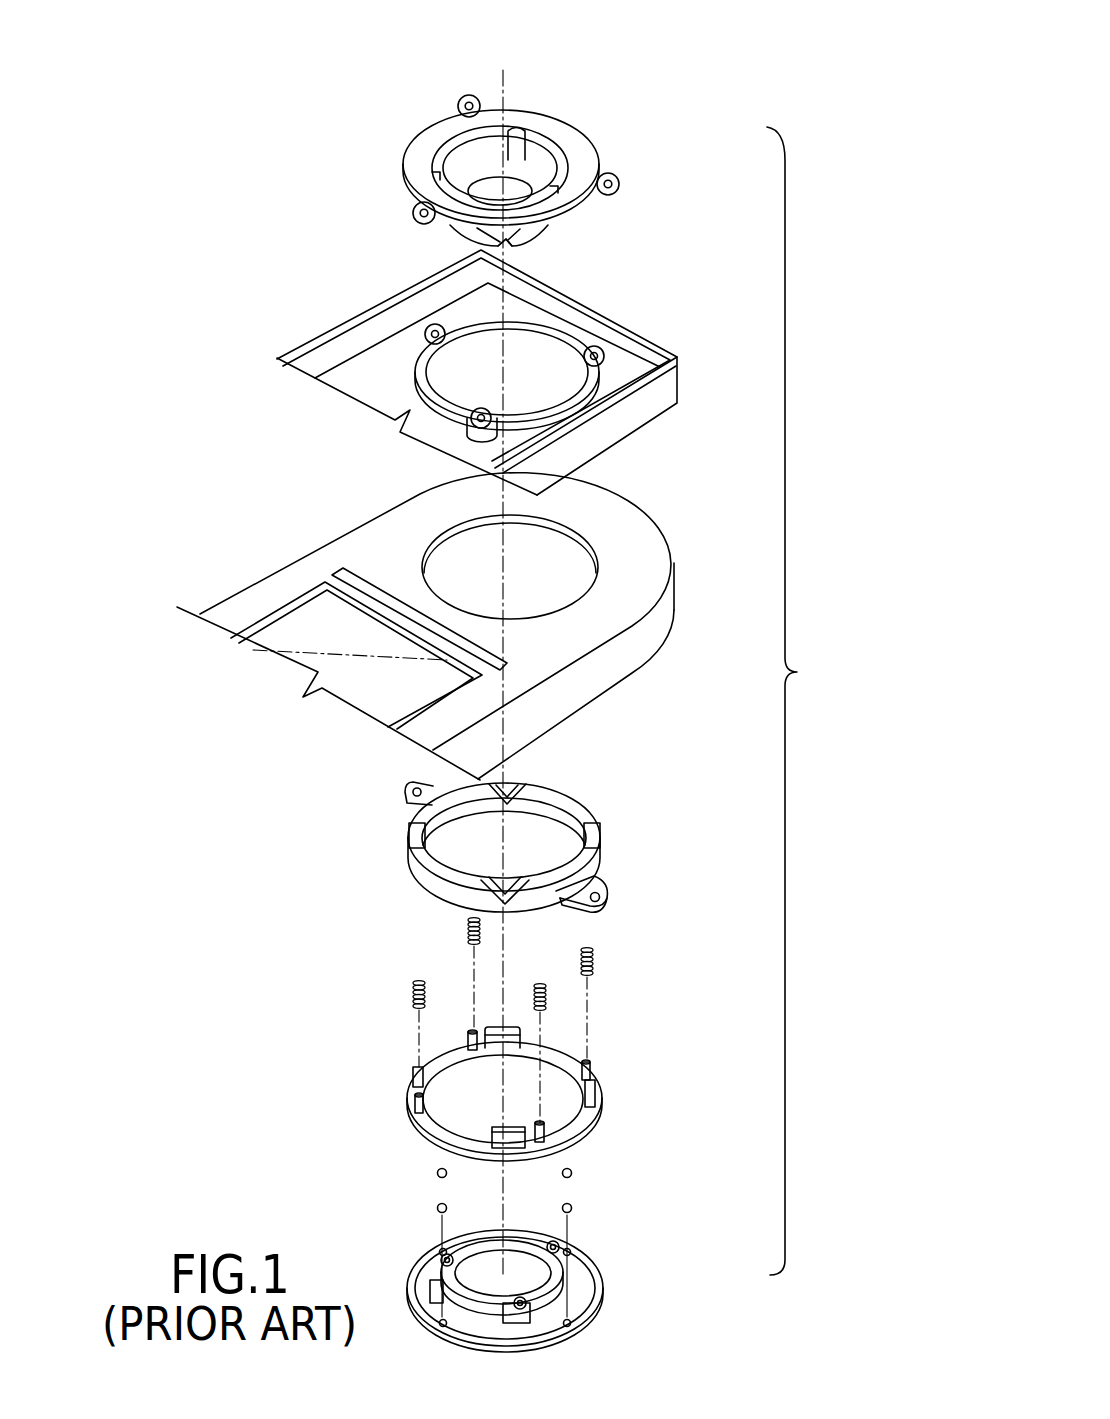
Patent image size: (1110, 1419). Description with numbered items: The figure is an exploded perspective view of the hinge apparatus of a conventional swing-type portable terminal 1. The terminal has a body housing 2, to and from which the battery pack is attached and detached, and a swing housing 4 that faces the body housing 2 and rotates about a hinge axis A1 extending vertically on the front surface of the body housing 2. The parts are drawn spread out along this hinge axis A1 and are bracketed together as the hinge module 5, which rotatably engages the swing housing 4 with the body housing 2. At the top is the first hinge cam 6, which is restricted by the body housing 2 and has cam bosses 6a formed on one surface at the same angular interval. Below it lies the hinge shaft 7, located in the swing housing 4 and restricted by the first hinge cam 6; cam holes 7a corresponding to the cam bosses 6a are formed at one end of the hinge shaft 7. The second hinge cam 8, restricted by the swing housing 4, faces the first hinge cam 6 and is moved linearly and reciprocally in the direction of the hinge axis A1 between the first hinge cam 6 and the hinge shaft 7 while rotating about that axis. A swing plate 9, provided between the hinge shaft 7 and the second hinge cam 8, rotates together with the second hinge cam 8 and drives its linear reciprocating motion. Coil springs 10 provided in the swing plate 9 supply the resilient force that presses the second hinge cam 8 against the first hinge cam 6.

The swing-type portable terminal 1 is at (652, 40).
The body housing 2 is at (630, 315).
The swing housing 4 is at (682, 524).
The hinge module 5 is at (795, 701).
The first hinge cam 6 is at (410, 124).
The cam bosses 6a is at (522, 243).
The hinge shaft 7 is at (605, 799).
The cam holes 7a is at (519, 783).
The second hinge cam 8 is at (623, 1257).
The swing plate 9 is at (406, 1140).
The coil springs 10 is at (482, 928).
The hinge axis A1 is at (506, 88).